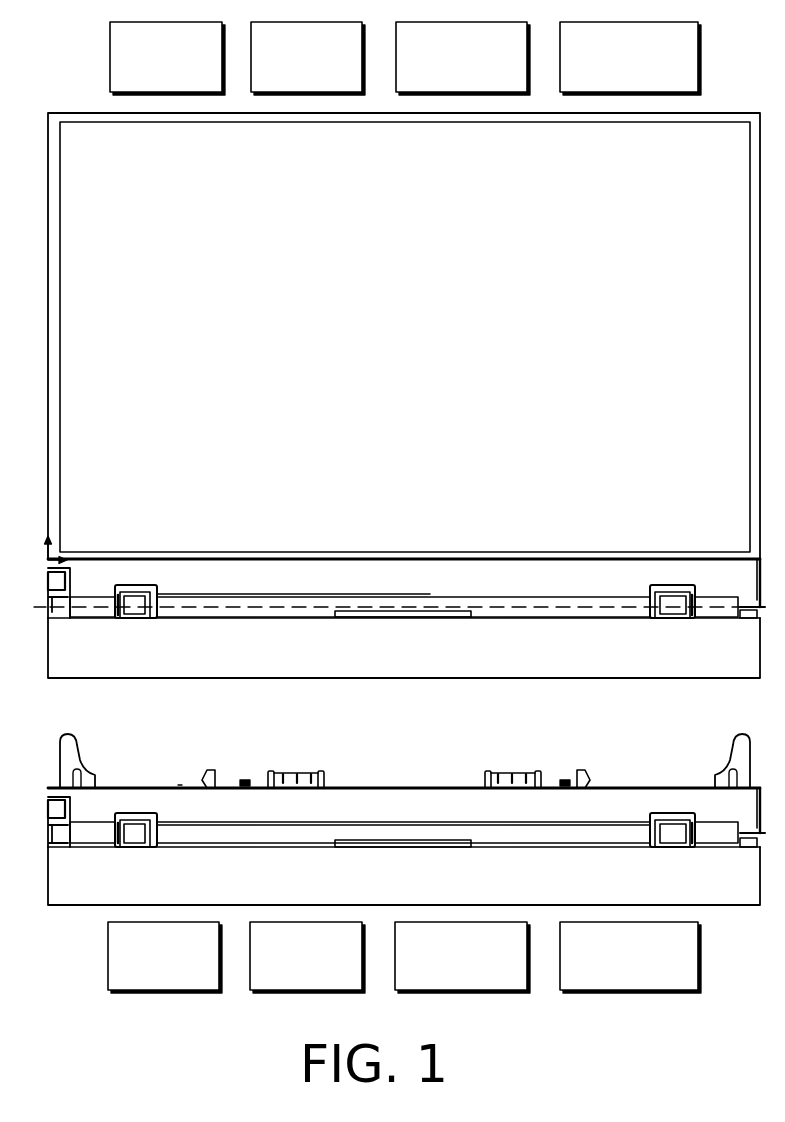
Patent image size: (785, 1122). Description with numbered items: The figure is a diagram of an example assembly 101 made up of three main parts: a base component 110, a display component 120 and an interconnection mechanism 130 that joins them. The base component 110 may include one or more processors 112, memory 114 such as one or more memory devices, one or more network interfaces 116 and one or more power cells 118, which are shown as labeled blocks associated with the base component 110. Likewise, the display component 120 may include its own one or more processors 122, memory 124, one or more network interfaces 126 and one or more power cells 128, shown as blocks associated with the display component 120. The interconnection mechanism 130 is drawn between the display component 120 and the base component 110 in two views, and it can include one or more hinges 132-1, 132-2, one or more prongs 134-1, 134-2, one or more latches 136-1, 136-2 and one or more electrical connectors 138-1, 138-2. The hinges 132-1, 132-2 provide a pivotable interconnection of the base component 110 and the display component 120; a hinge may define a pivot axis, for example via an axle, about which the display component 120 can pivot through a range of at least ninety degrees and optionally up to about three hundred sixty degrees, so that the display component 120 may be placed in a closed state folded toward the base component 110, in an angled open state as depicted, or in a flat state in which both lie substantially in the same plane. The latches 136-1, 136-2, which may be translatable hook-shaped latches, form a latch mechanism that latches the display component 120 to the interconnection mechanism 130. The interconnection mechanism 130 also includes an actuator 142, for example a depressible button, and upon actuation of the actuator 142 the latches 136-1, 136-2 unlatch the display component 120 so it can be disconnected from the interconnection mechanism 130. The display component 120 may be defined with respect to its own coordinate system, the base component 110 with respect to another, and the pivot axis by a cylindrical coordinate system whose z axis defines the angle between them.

The assembly 101 is at (85, 89).
The base component 110 is at (404, 761).
The processors 112 is at (165, 957).
The memory 114 is at (307, 957).
The network interfaces 116 is at (462, 957).
The power cells 118 is at (630, 957).
The display component 120 is at (404, 336).
The processors 122 is at (167, 58).
The memory 124 is at (308, 58).
The network interfaces 126 is at (463, 58).
The power cells 128 is at (630, 58).
The interconnection mechanism 130 is at (406, 703).
The hinge 132-1 is at (133, 598).
The hinge 132-2 is at (679, 607).
The prong 134-1 is at (79, 742).
The prong 134-2 is at (735, 743).
The latch 136-1 is at (203, 782).
The latch 136-2 is at (590, 782).
The electrical connector 138-1 is at (315, 770).
The electrical connector 138-2 is at (490, 770).
The actuator 142 is at (60, 588).